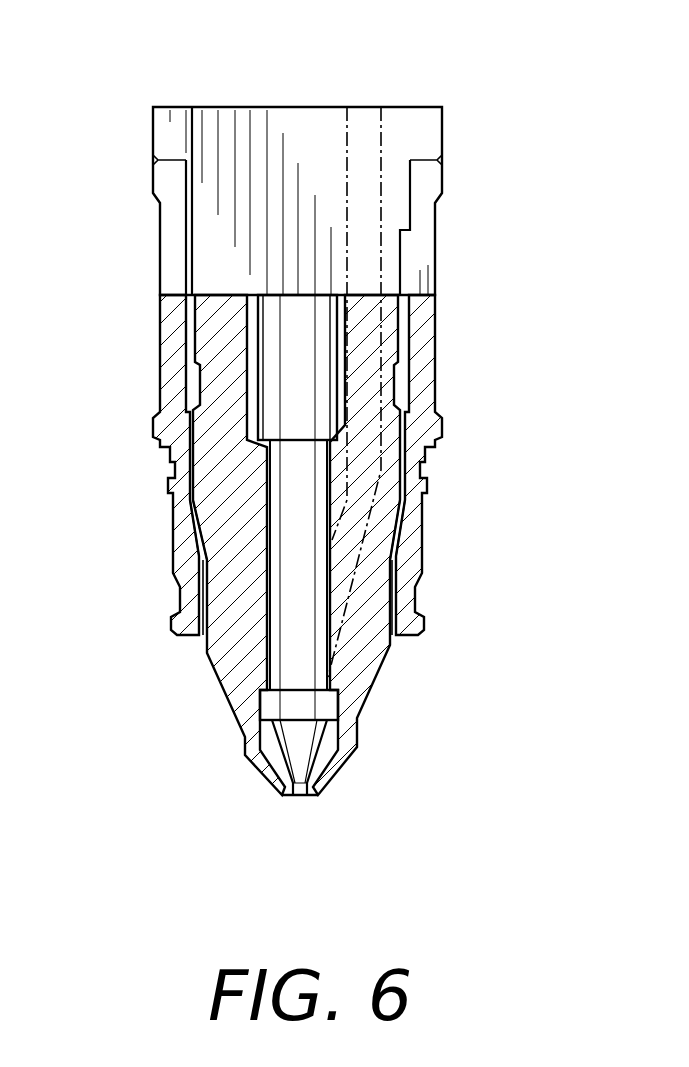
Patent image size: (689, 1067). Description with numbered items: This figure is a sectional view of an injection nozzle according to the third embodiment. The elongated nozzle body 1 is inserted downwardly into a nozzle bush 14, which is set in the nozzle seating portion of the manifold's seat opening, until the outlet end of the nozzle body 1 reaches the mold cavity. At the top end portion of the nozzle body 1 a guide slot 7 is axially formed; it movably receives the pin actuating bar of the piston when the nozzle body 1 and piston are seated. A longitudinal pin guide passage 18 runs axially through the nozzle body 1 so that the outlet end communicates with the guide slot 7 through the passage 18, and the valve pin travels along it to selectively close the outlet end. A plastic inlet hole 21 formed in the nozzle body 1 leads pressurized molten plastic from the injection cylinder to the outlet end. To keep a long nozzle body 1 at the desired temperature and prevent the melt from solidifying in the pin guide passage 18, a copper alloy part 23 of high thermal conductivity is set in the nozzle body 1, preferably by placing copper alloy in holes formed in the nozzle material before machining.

The nozzle body 1 is at (473, 210).
The guide slot 7 is at (296, 118).
The nozzle bush 14 is at (423, 378).
The pin guide passage 18 is at (285, 653).
The plastic inlet hole 21 is at (357, 533).
The copper alloy part 23 is at (210, 502).